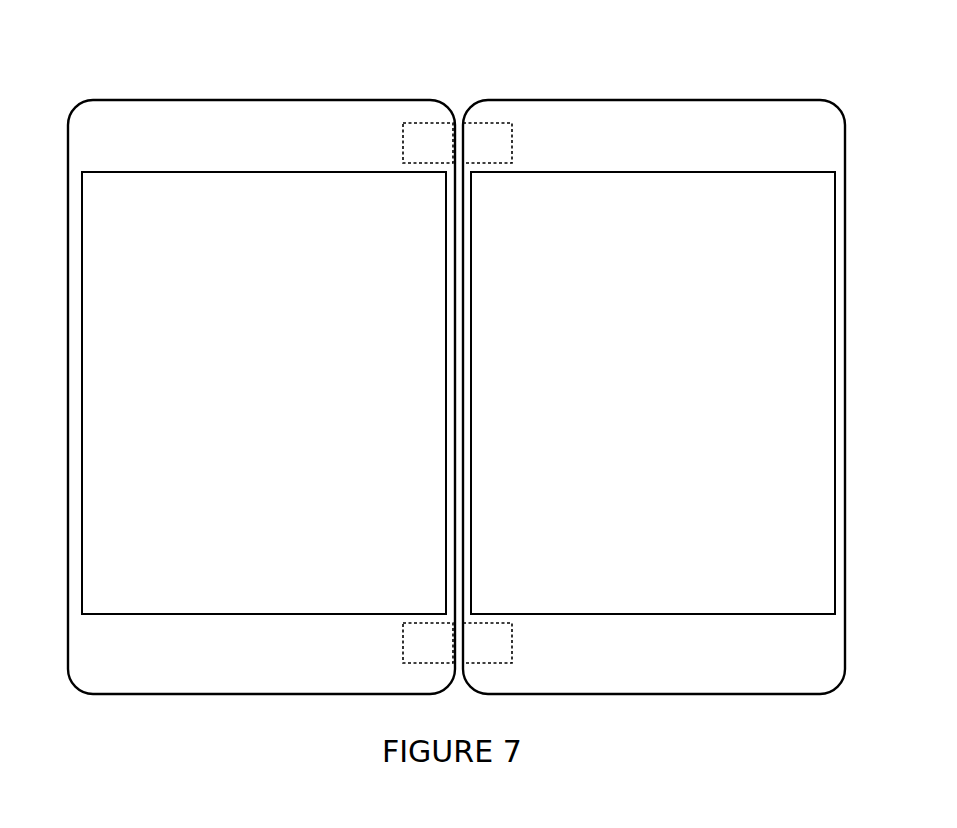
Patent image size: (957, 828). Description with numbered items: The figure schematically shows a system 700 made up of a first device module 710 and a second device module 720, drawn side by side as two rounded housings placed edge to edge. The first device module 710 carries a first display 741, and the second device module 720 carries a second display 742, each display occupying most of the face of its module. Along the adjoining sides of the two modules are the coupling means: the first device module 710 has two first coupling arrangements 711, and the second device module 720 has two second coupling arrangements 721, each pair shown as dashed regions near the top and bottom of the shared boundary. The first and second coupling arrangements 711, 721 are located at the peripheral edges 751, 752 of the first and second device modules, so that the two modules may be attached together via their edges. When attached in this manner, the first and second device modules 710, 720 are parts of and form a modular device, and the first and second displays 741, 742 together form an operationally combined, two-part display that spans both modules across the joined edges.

The system 700 is at (305, 65).
The first device module 710 is at (175, 663).
The second device module 720 is at (670, 652).
The first coupling arrangements 711 is at (403, 130).
The second coupling arrangements 721 is at (512, 130).
The first display 741 is at (82, 378).
The second display 742 is at (836, 360).
The peripheral edge of the first device module 751 is at (147, 100).
The peripheral edge of the second device module 752 is at (683, 100).